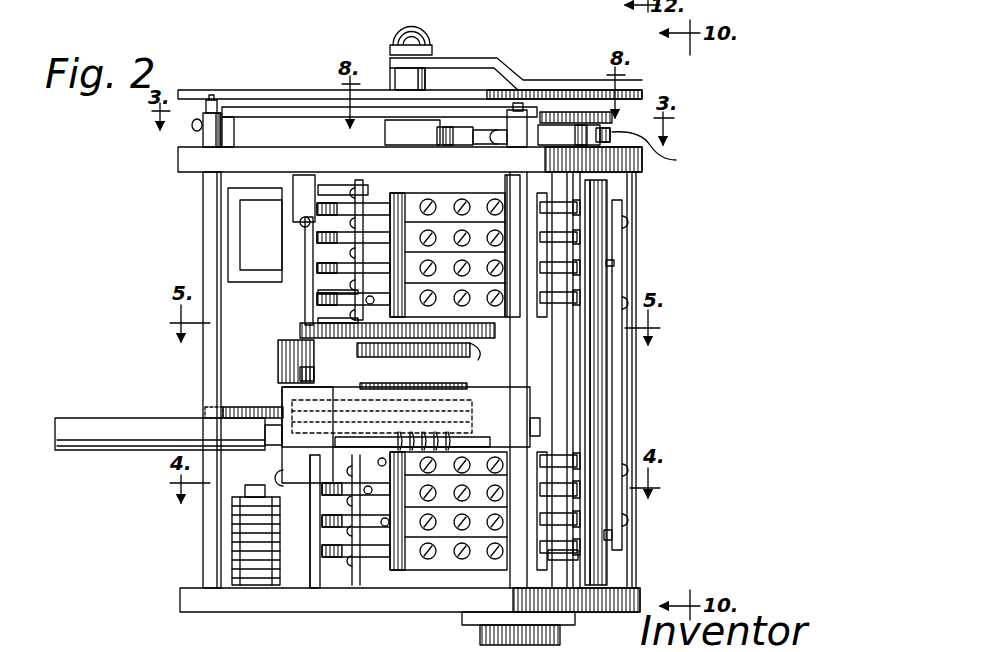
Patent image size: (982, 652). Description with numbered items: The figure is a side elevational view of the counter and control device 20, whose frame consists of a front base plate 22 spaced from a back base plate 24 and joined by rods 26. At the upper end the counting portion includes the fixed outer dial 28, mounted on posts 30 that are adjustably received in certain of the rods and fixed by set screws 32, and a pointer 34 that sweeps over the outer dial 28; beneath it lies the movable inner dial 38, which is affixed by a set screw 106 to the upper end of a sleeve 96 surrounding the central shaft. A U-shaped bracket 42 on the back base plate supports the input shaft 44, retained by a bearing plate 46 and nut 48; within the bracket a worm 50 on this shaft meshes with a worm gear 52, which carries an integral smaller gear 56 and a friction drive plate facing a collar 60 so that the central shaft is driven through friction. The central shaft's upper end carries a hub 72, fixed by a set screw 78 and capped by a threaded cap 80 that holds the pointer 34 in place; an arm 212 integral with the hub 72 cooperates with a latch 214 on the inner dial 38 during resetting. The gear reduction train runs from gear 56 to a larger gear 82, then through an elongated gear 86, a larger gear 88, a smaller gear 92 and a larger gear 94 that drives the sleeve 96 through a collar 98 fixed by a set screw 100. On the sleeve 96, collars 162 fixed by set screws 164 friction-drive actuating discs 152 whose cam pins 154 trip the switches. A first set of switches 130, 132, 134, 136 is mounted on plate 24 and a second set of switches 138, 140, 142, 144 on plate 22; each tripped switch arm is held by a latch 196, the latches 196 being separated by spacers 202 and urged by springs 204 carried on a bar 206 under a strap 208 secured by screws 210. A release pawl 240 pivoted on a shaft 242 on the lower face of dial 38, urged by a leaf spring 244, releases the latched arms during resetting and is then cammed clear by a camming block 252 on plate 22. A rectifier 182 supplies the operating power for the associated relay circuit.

The counter and control device 20 is at (200, 188).
The front base plate 22 is at (196, 157).
The back base plate 24 is at (192, 598).
The rods 26 is at (204, 237).
The fixed outer dial 28 is at (198, 118).
The posts 30 is at (215, 111).
The set screws 32 is at (214, 100).
The pointer 34 is at (514, 82).
The movable inner dial 38 is at (258, 117).
The U-shaped bracket 42 is at (572, 368).
The shaft 44 is at (145, 405).
The bearing plate 46 is at (283, 468).
The nut 48 is at (545, 428).
The worm 50 is at (345, 447).
The worm gear 52 is at (550, 410).
The smaller gear 56 is at (458, 410).
The collar 60 is at (400, 385).
The hub 72 is at (388, 75).
The set screw 78 is at (402, 78).
The threaded cap 80 is at (412, 30).
The larger gear 82 is at (248, 407).
The smaller and elongated gear 86 is at (286, 366).
The larger gear 88 is at (300, 345).
The smaller gear 92 is at (318, 303).
The larger gear 94 is at (318, 326).
The sleeve 96 is at (455, 370).
The collar 98 is at (480, 361).
The set screw 100 is at (325, 373).
The set screw 106 is at (385, 140).
The switch 130 is at (568, 545).
The switch 132 is at (582, 515).
The switch 134 is at (575, 495).
The switch 136 is at (565, 455).
The switch 138 is at (612, 340).
The switch 140 is at (412, 256).
The switch 142 is at (415, 240).
The switch 144 is at (445, 215).
The actuating disc 152 is at (318, 243).
The cam pin 154 is at (385, 238).
The collars 162 is at (240, 205).
The set screws 164 is at (308, 265).
The rectifier 182 is at (232, 522).
The latch 196 is at (558, 556).
The spacers 202 is at (598, 190).
The spring 204 is at (616, 238).
The bar 206 is at (608, 298).
The strap 208 is at (614, 262).
The screws 210 is at (626, 218).
The arm 212 is at (487, 108).
The latch 214 is at (540, 120).
The release pawl 240 is at (622, 128).
The shaft 242 is at (584, 128).
The leaf spring 244 is at (659, 150).
The camming block 252 is at (452, 135).